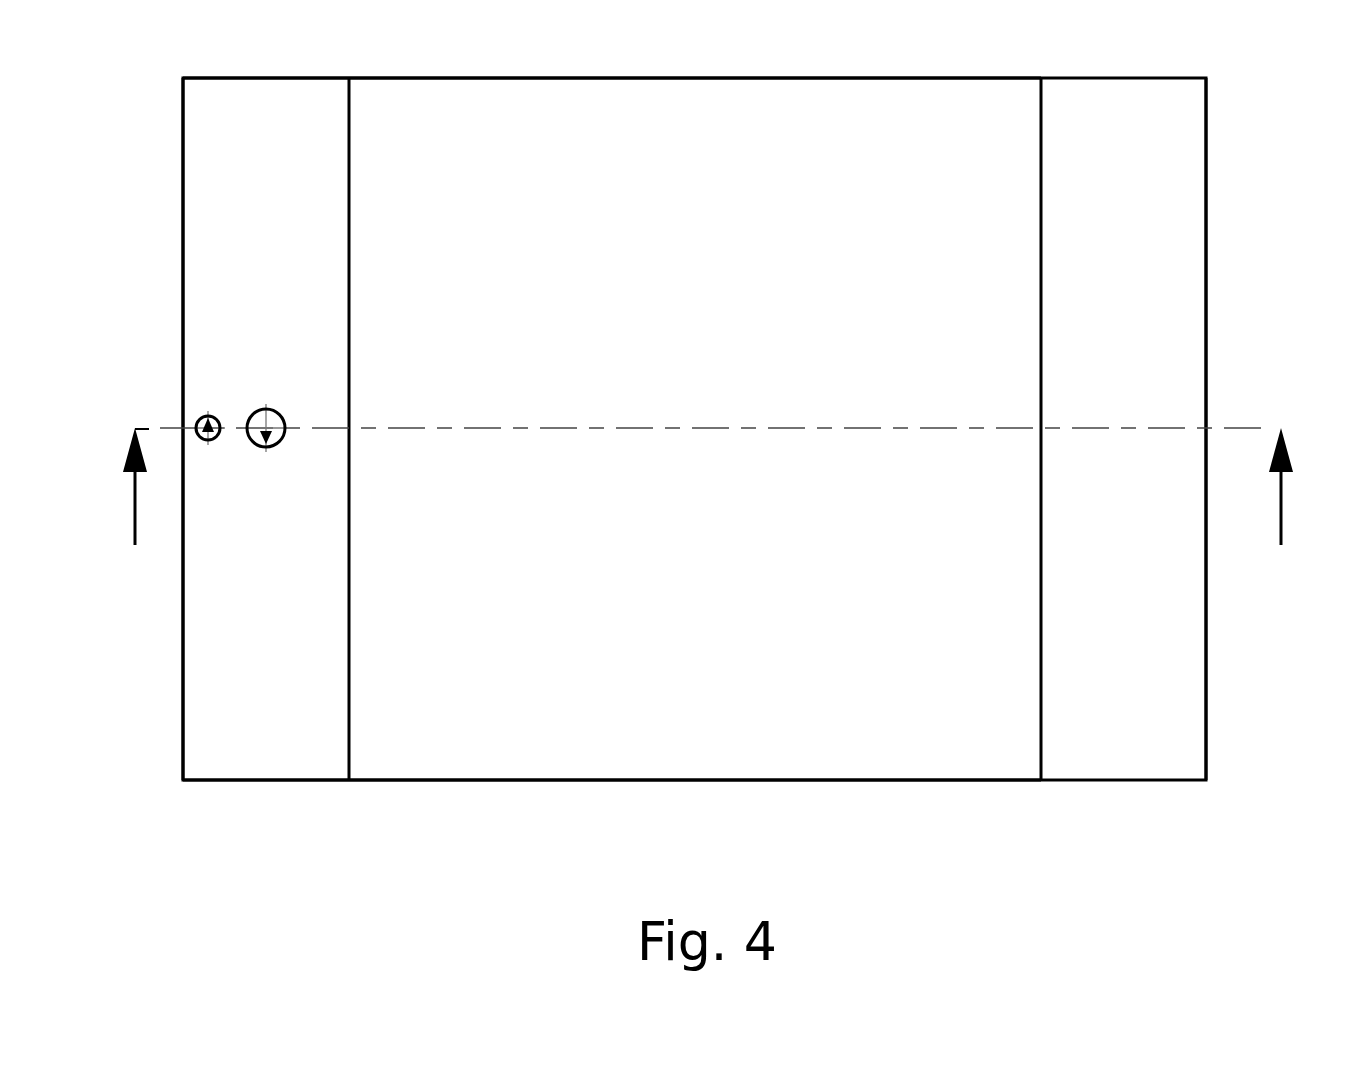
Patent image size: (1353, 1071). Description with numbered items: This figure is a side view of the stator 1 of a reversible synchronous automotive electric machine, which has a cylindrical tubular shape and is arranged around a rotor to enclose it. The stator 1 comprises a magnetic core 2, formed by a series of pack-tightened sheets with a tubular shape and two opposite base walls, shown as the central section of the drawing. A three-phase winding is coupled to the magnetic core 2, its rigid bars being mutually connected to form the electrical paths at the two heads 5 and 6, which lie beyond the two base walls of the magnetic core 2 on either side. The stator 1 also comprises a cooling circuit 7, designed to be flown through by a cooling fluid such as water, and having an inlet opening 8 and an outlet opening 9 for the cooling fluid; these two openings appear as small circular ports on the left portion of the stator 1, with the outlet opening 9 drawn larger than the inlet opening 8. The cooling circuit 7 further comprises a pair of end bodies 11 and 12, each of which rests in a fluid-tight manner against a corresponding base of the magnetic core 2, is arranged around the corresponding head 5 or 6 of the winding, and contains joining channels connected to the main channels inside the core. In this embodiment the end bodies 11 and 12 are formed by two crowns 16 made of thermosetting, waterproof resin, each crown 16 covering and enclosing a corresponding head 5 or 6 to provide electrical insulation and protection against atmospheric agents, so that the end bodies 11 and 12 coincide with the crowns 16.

The stator 1 is at (703, 507).
The magnetic core 2 is at (955, 728).
The head 5 is at (265, 832).
The head 6 is at (1126, 834).
The cooling circuit 7 is at (116, 829).
The inlet opening 8 is at (208, 440).
The outlet opening 9 is at (266, 432).
The end body 11 is at (207, 496).
The end body 12 is at (1181, 496).
The crown 16 is at (693, 496).